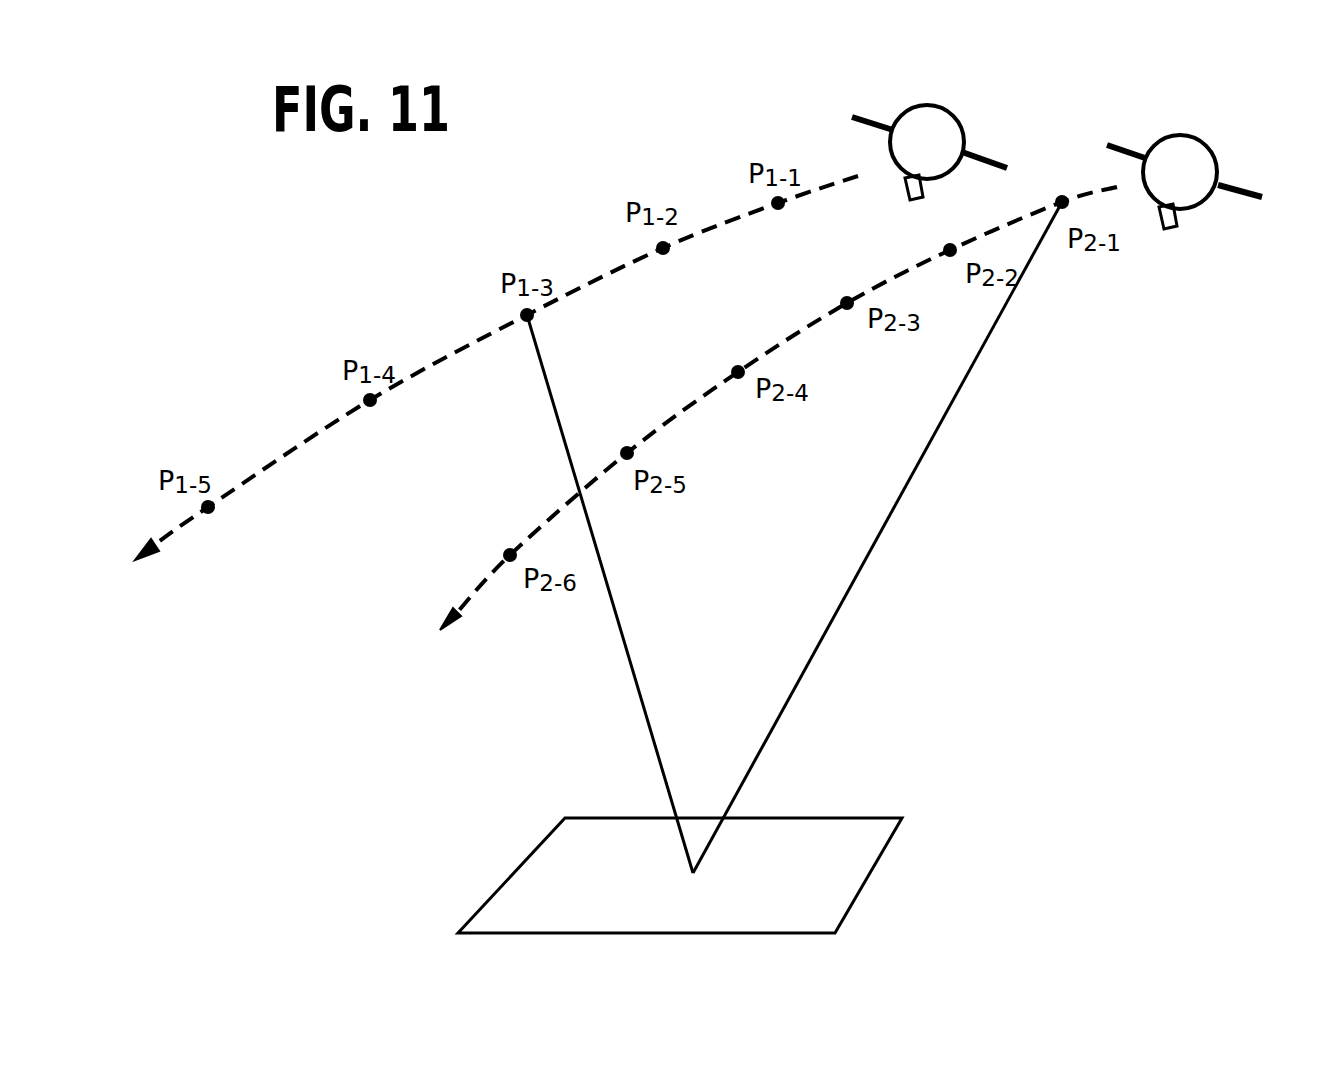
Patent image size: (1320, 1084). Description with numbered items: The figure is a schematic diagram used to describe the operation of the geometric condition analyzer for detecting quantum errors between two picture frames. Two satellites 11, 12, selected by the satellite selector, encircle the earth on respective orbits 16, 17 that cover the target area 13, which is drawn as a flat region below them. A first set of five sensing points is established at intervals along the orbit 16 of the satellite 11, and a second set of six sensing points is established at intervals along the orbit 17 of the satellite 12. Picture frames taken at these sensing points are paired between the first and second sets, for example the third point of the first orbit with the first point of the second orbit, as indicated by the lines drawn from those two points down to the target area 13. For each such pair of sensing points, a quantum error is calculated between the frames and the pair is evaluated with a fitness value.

The satellite 11 is at (938, 106).
The satellite 12 is at (1192, 136).
The target area 13 is at (876, 818).
The orbit 16 is at (263, 465).
The orbit 17 is at (470, 593).